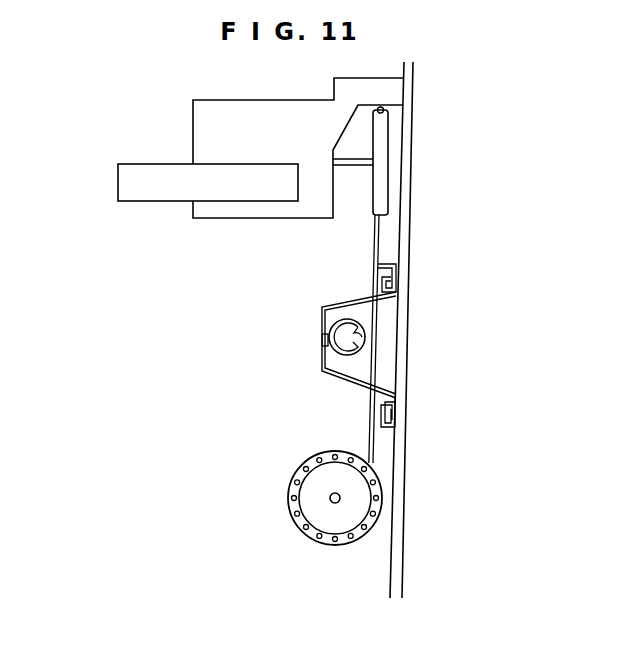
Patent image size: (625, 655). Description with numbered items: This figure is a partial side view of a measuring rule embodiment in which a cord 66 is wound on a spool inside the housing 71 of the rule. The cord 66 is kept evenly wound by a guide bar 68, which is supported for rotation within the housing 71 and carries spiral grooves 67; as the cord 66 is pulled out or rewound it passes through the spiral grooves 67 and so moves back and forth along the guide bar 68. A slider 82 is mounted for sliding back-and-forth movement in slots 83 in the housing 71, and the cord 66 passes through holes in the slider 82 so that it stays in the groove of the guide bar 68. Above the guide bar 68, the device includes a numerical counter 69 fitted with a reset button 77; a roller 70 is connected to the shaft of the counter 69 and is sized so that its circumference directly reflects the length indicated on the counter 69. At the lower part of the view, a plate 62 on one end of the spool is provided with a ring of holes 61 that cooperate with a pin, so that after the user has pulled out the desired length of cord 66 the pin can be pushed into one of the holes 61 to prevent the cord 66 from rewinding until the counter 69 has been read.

The holes 61 is at (335, 545).
The plate 62 is at (307, 508).
The cord 66 is at (372, 252).
The spiral grooves 67 is at (322, 347).
The guide bar 68 is at (343, 334).
The numerical counter 69 is at (210, 122).
The roller 70 is at (380, 140).
The housing 71 is at (404, 515).
The reset button 77 is at (132, 184).
The slider 82 is at (325, 377).
The slots 83 is at (393, 405).